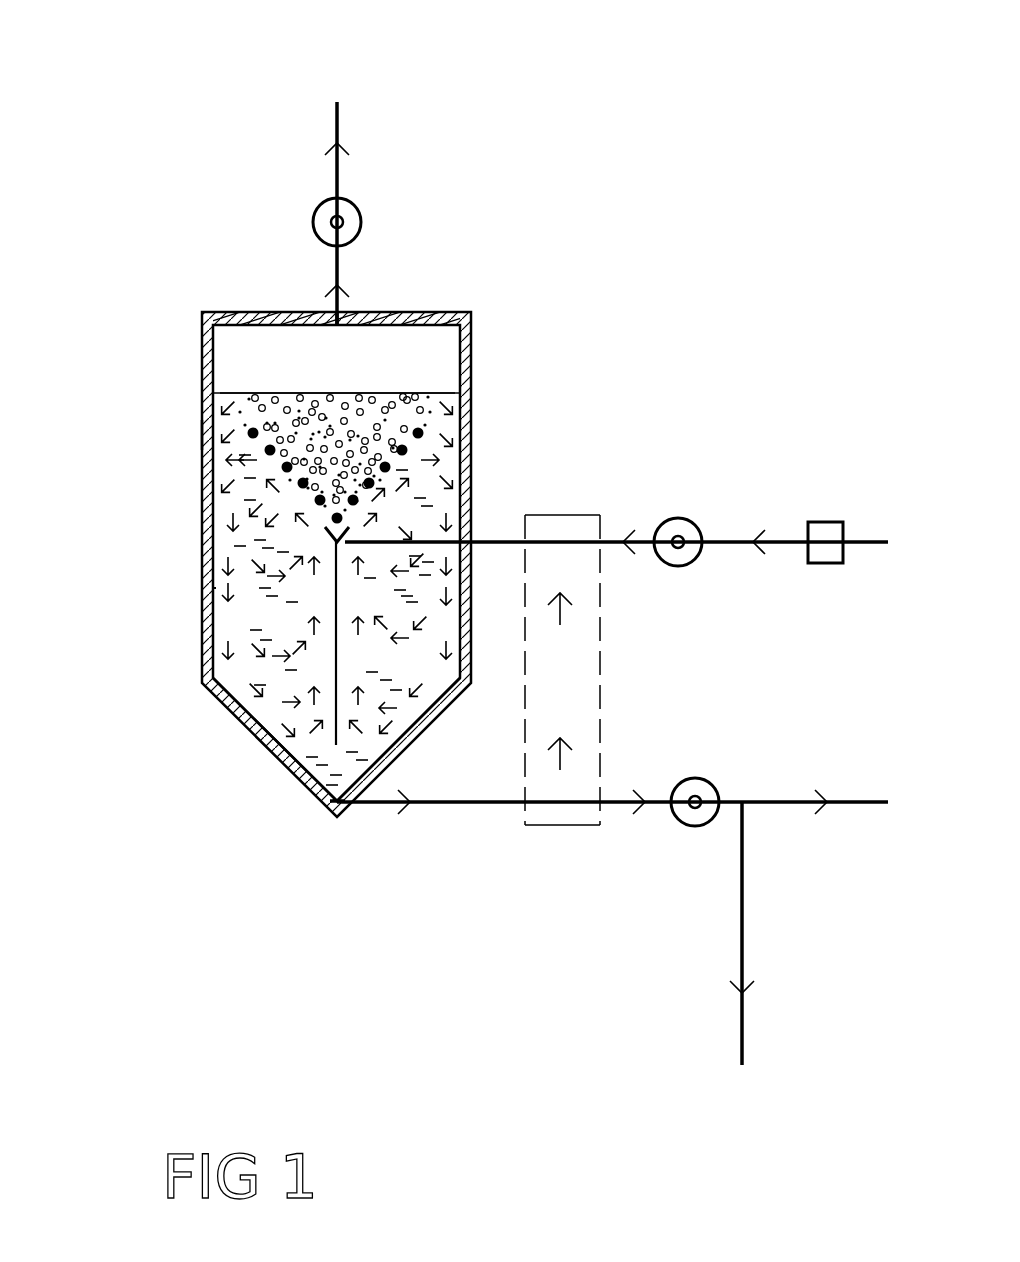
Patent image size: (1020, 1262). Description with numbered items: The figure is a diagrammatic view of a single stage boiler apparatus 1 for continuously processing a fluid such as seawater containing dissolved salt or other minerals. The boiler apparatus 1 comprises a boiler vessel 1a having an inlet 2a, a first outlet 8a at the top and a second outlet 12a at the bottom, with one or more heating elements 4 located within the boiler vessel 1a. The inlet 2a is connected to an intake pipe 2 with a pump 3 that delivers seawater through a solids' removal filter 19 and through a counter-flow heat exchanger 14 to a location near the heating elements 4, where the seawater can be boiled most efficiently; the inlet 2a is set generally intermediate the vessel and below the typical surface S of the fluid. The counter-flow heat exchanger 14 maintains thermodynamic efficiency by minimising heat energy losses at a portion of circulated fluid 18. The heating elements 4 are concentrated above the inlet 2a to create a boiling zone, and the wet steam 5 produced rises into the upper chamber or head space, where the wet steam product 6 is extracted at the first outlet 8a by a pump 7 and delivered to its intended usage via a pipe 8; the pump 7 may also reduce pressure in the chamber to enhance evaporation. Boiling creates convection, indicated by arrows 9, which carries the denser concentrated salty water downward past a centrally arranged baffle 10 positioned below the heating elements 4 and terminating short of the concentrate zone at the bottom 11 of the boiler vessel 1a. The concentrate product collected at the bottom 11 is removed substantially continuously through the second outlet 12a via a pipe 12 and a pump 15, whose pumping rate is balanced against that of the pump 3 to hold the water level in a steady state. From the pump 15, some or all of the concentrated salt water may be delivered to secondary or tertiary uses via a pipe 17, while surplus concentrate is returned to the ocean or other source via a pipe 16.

The boiler apparatus 1 is at (285, 279).
The boiler vessel 1a is at (202, 435).
The surface S is at (280, 393).
The intake pipe 2 is at (770, 540).
The inlet 2a is at (345, 540).
The pump 3 is at (695, 520).
The heating elements 4 is at (430, 432).
The wet steam 5 is at (403, 393).
The wet steam product / upper chamber or head space 6 is at (395, 358).
The pump 7 is at (362, 213).
The pipe 8 is at (340, 122).
The first outlet 8a is at (345, 320).
The convection currents 9 is at (213, 588).
The baffle 10 is at (335, 650).
The bottom 11 is at (307, 758).
The second outlet 12a is at (330, 805).
The pipe 12 is at (443, 803).
The counter-flow heat exchanger 14 is at (540, 828).
The pump 15 is at (697, 828).
The pipe 16 is at (787, 797).
The pipe 17 is at (740, 1015).
The portion of circulated fluid 18 is at (565, 756).
The solids' removal filter 19 is at (843, 520).